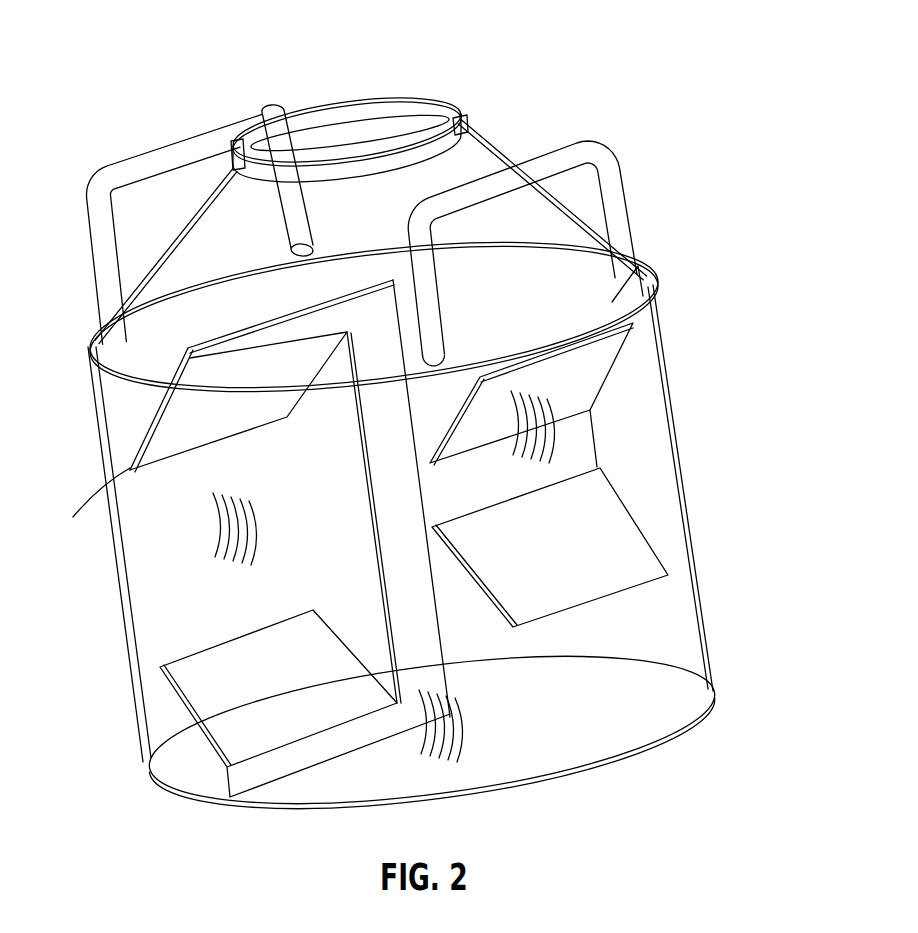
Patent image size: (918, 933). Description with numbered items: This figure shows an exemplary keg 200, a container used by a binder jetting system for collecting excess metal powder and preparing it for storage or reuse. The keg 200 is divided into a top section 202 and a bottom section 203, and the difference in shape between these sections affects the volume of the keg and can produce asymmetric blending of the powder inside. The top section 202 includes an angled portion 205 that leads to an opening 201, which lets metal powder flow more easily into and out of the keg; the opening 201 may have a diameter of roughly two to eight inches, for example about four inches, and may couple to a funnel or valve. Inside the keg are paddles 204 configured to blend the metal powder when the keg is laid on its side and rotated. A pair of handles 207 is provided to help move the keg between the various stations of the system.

The keg 200 is at (668, 68).
The opening 201 is at (348, 118).
The top section 202 is at (615, 298).
The bottom section 203 is at (630, 670).
The paddles 204 is at (192, 680).
The angled portion 205 is at (483, 143).
The handles 207 is at (627, 193).